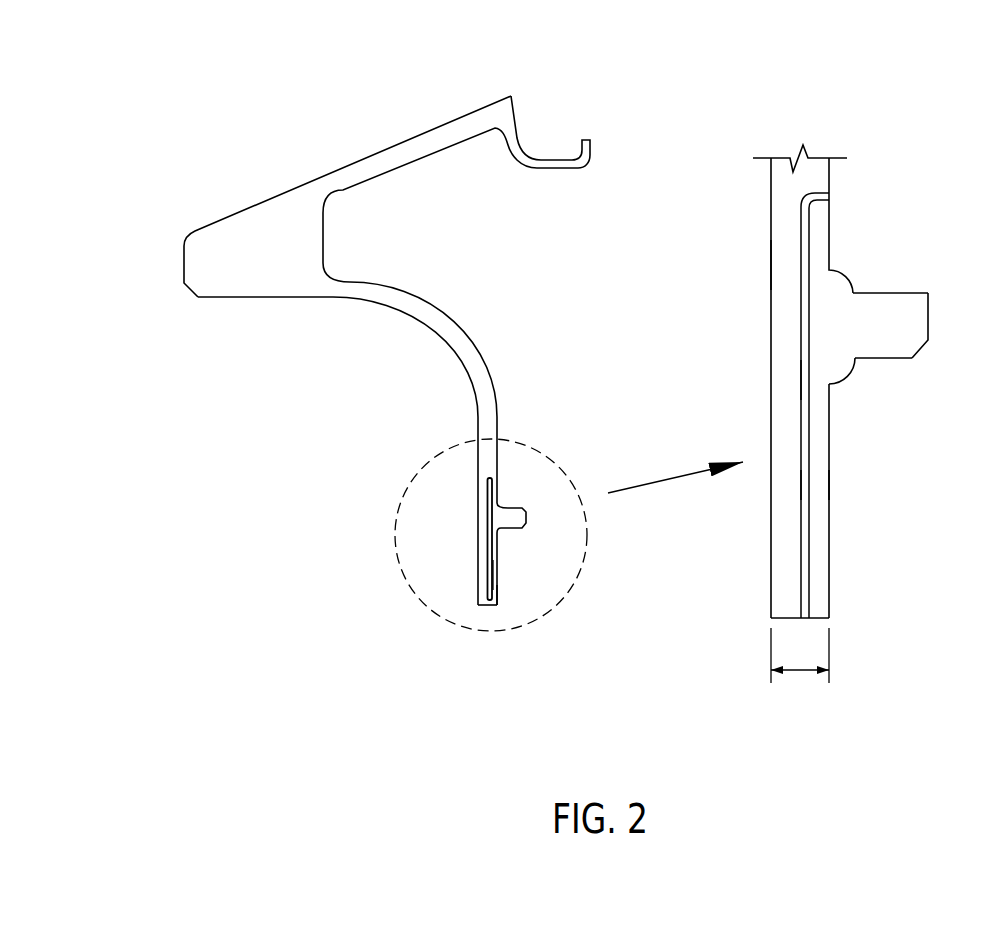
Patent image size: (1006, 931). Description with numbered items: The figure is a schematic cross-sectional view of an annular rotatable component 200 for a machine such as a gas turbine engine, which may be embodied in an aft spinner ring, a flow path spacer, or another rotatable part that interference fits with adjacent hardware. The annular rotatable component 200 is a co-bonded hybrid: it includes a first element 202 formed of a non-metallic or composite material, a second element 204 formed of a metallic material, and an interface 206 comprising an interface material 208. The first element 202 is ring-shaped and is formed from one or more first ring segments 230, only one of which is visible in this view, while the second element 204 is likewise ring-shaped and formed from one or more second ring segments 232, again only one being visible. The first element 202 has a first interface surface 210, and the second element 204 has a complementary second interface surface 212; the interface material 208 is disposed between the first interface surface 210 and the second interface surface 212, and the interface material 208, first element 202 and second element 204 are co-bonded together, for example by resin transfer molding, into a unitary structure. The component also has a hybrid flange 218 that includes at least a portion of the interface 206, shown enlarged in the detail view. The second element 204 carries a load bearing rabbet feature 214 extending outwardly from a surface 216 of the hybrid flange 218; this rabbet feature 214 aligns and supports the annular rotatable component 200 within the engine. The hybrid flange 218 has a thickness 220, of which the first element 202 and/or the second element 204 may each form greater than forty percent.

The annular rotatable component 200 is at (293, 83).
The first element 202 is at (252, 255).
The second element 204 is at (493, 573).
The interface 206 is at (487, 612).
The interface material 208 is at (488, 548).
The first interface surface 210 is at (801, 377).
The second interface surface 212 is at (801, 482).
The load bearing rabbet feature 214 is at (513, 518).
The surface of hybrid flange 216 is at (497, 551).
The hybrid flange 218 is at (378, 506).
The thickness 220 is at (800, 672).
The first ring segment 230 is at (273, 298).
The second ring segment 232 is at (497, 594).